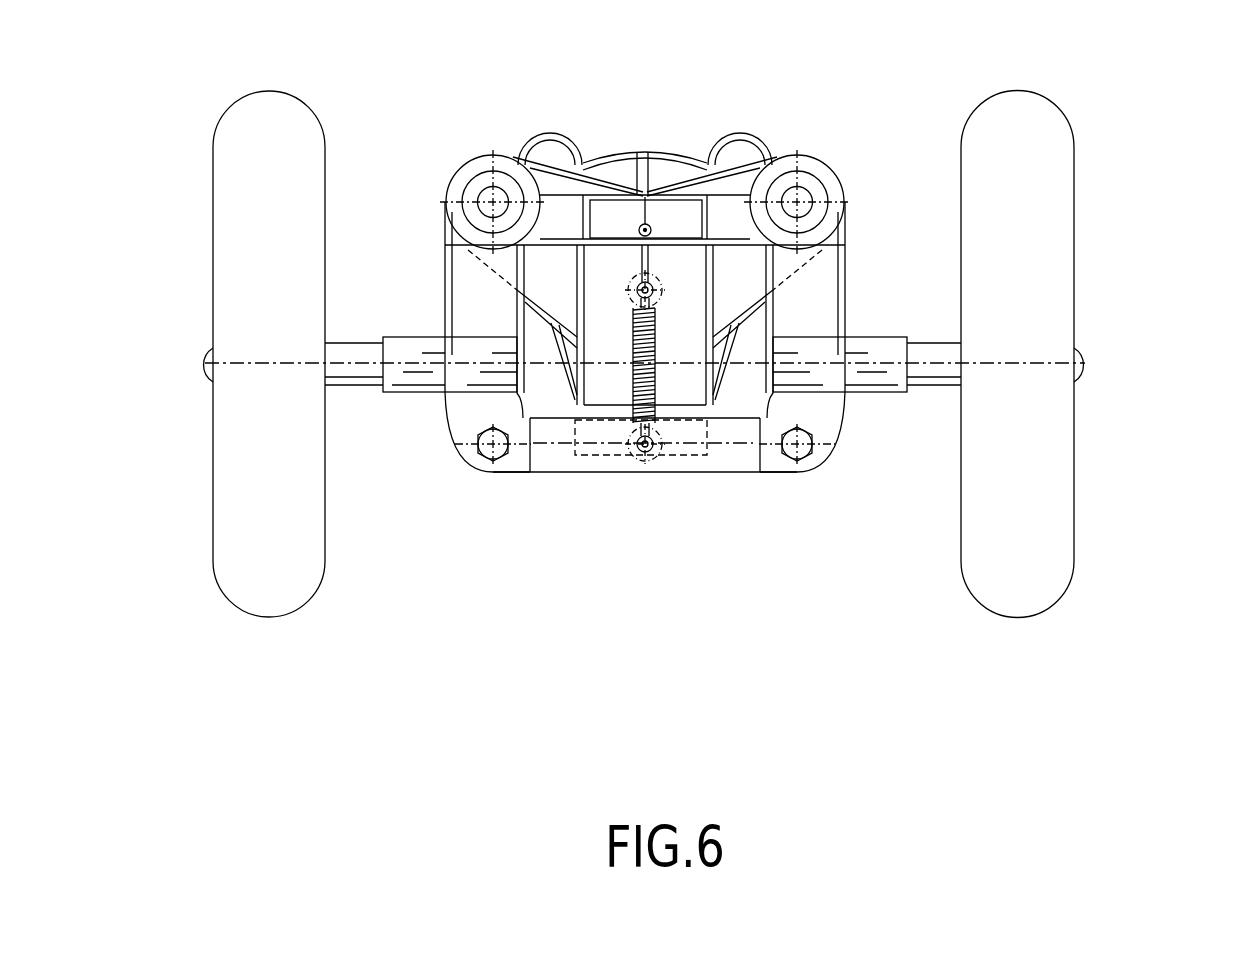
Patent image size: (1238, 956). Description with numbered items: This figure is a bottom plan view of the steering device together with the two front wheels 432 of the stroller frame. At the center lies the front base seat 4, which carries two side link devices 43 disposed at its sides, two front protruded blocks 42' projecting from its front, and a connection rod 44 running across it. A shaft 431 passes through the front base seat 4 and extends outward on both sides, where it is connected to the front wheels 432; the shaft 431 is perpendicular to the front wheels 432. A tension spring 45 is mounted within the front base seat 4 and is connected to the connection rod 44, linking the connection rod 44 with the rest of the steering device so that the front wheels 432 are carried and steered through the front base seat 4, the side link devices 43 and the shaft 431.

The front base seat 4 is at (637, 152).
The front protruded block 42' is at (667, 113).
The side link device 43 is at (822, 307).
The shaft 431 is at (923, 372).
The front wheel 432 is at (1047, 230).
The connection rod 44 is at (722, 452).
The tension spring 45 is at (633, 428).